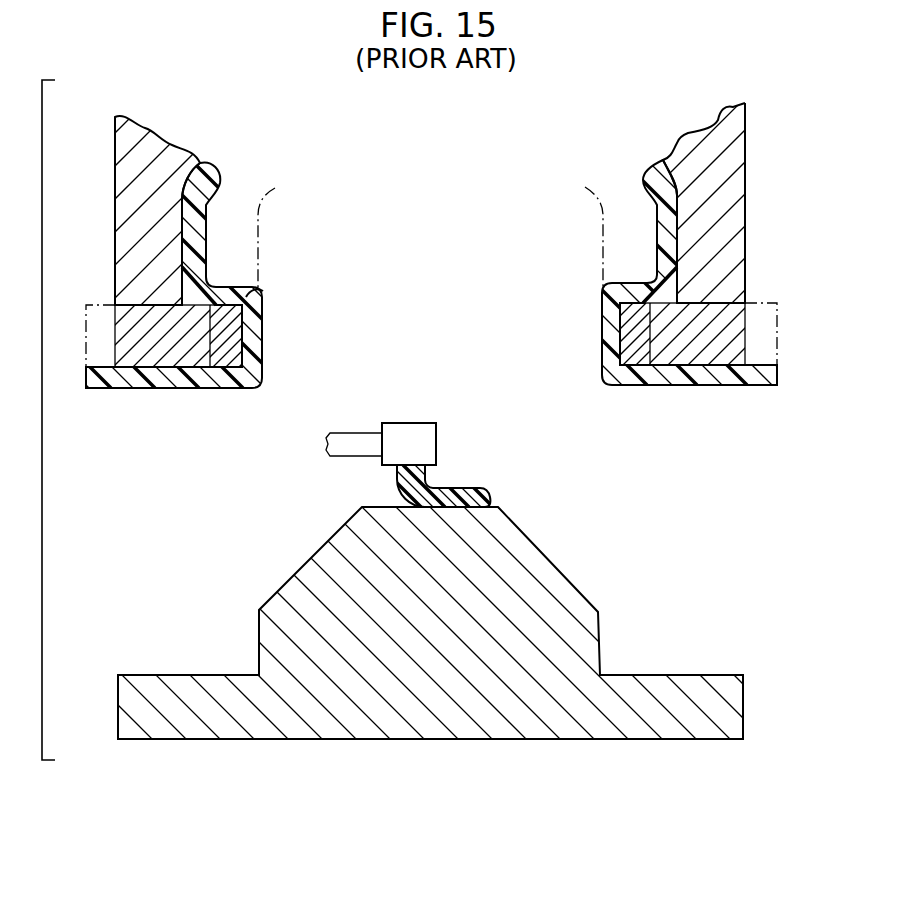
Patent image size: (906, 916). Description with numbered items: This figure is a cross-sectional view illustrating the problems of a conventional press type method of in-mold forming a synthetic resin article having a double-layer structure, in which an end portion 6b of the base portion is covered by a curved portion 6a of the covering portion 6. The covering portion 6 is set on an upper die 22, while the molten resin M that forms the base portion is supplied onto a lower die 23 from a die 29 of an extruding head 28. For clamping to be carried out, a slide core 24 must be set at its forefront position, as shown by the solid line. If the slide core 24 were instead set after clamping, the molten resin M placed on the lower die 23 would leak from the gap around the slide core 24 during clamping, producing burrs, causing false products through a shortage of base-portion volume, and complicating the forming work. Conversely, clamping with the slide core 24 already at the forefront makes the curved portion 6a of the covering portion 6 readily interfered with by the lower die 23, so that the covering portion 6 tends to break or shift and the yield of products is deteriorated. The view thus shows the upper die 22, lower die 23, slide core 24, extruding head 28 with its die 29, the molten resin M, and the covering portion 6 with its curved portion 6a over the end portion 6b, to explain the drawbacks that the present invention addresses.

The covering portion 6 is at (197, 233).
The curved portion 6a is at (263, 297).
The end portion 6b is at (597, 219).
The upper die 22 is at (732, 170).
The lower die 23 is at (538, 568).
The slide core 24 is at (733, 337).
The extruding head 28 is at (410, 397).
The die 29 is at (422, 445).
The molten resin M is at (473, 487).